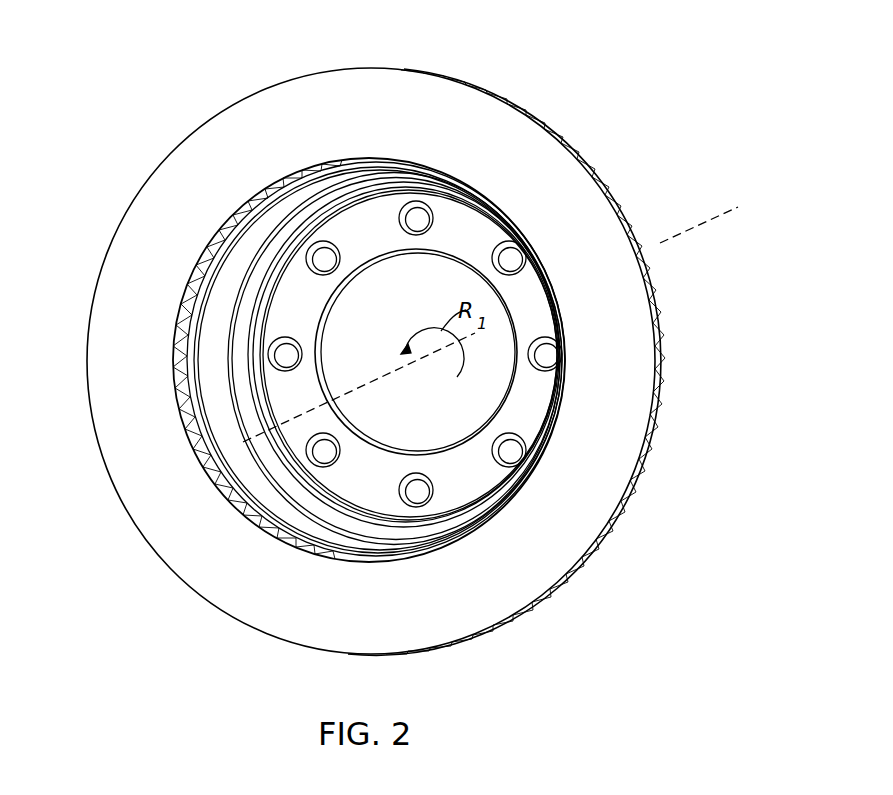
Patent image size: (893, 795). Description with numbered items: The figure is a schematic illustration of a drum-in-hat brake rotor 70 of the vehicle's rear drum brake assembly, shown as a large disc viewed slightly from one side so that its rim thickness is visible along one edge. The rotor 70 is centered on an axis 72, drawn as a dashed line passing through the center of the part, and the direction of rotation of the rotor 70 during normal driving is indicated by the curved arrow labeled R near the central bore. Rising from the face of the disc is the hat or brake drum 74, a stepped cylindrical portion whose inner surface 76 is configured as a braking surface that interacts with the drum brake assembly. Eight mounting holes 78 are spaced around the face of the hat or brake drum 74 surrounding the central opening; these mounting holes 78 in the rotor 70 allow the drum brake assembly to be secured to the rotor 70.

The rotor 70 is at (616, 162).
The axis 72 is at (702, 230).
The hat or brake drum 74 is at (370, 233).
The inner surface 76 is at (217, 410).
The mounting holes 78 is at (434, 496).